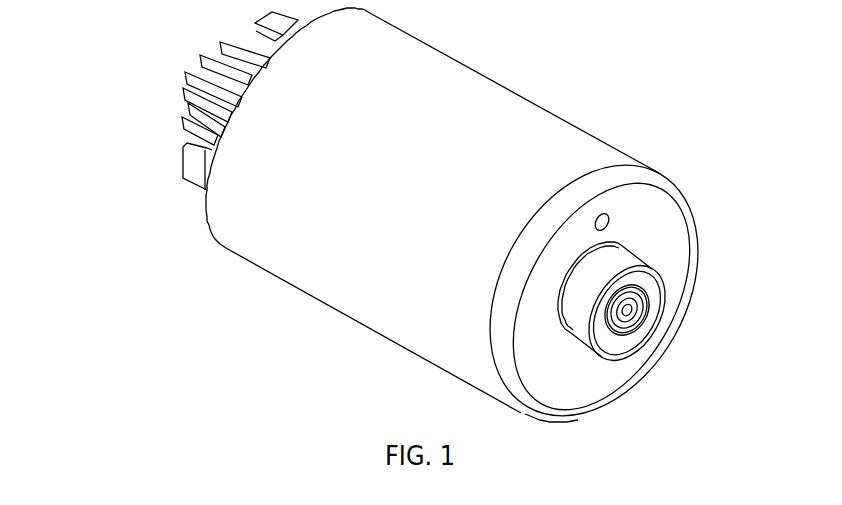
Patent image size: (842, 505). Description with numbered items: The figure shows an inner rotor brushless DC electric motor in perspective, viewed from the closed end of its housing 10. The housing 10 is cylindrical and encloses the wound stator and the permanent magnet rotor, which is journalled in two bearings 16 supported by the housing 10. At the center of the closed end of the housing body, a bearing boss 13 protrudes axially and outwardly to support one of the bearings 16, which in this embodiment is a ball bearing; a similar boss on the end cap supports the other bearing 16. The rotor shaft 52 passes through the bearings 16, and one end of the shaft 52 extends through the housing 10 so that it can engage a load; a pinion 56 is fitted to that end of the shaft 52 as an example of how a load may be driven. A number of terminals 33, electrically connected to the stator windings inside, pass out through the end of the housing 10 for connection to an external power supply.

The housing 10 is at (328, 277).
The bearing boss 13 is at (655, 312).
The bearings 16 is at (625, 315).
The shaft 52 is at (635, 328).
The pinion 56 is at (180, 100).
The terminals 33 is at (180, 158).